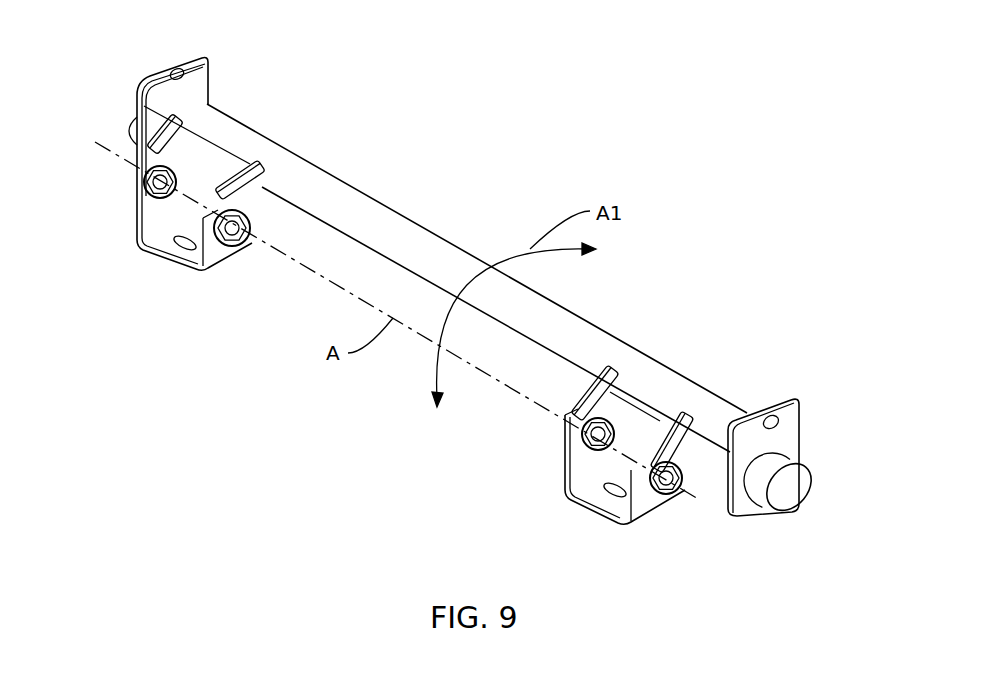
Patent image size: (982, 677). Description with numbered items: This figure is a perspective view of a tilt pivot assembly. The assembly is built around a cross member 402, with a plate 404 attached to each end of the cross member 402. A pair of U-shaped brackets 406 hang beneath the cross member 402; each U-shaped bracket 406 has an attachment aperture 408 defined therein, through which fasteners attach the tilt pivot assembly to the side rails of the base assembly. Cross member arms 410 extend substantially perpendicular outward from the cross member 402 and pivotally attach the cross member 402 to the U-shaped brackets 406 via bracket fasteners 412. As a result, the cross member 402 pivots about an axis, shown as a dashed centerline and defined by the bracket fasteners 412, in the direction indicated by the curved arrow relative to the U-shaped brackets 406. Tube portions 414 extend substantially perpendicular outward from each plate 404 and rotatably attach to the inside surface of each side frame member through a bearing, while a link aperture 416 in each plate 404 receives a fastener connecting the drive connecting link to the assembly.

The cross member 402 is at (420, 226).
The plate 404 is at (200, 58).
The U-shaped bracket 406 is at (132, 218).
The attachment aperture 408 is at (180, 248).
The cross member arm 410 is at (182, 143).
The bracket fastener 412 is at (177, 178).
The tube portion 414 is at (127, 125).
The link aperture 416 is at (173, 66).